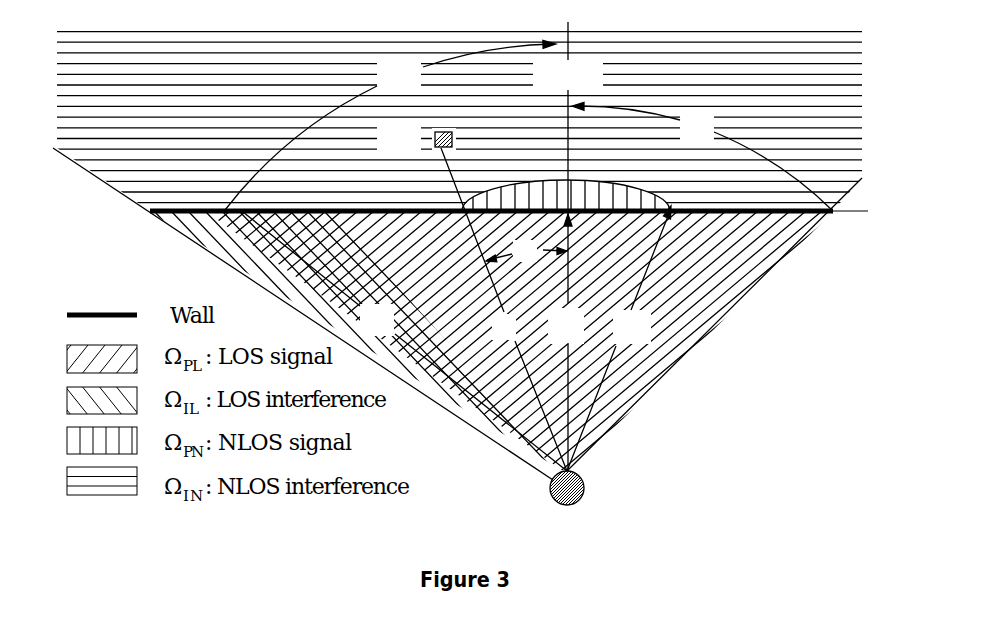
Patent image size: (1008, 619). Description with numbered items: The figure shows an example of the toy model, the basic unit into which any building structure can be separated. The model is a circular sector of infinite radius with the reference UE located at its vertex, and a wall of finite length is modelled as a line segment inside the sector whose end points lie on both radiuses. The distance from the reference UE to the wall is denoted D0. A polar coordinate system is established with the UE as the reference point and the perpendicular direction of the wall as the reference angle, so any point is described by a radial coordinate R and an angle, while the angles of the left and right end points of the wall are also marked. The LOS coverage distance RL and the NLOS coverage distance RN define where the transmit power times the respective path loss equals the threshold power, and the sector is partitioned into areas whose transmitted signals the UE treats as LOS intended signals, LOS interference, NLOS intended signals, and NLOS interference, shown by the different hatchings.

The reference UE is at (592, 487).
The polar radial coordinate R is at (504, 309).
The LOS coverage distance RL is at (405, 341).
The NLOS coverage distance RN is at (619, 338).
The distance from the UE to the wall D0 is at (567, 246).